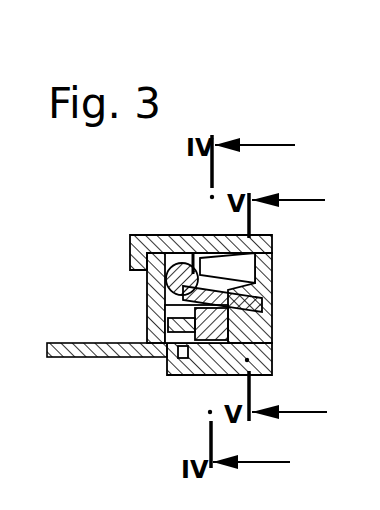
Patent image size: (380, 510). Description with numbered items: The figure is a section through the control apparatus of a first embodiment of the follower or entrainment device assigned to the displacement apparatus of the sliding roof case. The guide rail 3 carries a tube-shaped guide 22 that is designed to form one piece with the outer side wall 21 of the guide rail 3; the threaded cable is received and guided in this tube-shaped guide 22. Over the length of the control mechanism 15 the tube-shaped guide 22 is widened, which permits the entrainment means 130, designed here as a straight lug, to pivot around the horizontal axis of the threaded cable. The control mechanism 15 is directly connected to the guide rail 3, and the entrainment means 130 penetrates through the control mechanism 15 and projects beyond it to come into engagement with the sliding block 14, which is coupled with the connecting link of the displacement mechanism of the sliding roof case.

The guide rail 3 is at (73, 343).
The outer side wall 21 is at (146, 306).
The tube-shaped guide 22 is at (172, 205).
The sliding block 14 is at (272, 262).
The entrainment means 130 is at (272, 305).
The control mechanism 15 is at (266, 344).